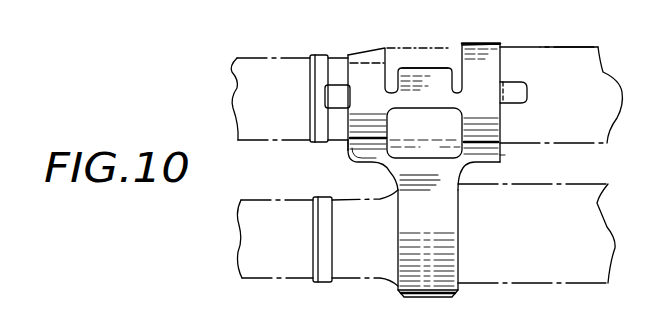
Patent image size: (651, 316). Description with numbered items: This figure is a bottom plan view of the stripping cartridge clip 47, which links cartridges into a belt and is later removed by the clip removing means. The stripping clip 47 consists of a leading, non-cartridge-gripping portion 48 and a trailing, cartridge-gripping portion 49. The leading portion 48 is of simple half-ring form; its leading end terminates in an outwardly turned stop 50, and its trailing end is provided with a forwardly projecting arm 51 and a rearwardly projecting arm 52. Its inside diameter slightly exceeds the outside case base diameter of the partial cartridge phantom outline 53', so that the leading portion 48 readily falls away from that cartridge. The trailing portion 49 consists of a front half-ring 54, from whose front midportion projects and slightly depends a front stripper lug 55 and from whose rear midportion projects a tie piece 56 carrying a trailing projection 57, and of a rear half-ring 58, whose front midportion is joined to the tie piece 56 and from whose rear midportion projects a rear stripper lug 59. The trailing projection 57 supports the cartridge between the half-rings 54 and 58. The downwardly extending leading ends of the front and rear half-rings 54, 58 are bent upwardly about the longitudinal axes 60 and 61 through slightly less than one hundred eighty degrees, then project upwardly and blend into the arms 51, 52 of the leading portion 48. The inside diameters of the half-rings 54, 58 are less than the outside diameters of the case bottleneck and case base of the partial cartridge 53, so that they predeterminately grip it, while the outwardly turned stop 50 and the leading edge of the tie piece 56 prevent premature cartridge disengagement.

The stripping clip 47 is at (328, 185).
The leading portion 48 is at (458, 228).
The trailing portion 49 is at (572, 72).
The outwardly turned stop 50 is at (452, 296).
The forwardly projecting arm 51 is at (384, 168).
The rearwardly projecting arm 52 is at (468, 166).
The cartridge 53 is at (569, 34).
The cartridge phantom outline 53' is at (536, 244).
The front half-ring 54 is at (378, 50).
The front stripper lug 55 is at (330, 95).
The tie piece 56 is at (418, 106).
The trailing projection 57 is at (427, 55).
The rear half-ring 58 is at (490, 44).
The rear stripper lug 59 is at (518, 97).
The longitudinal axis 60 is at (344, 147).
The longitudinal axis 61 is at (506, 150).